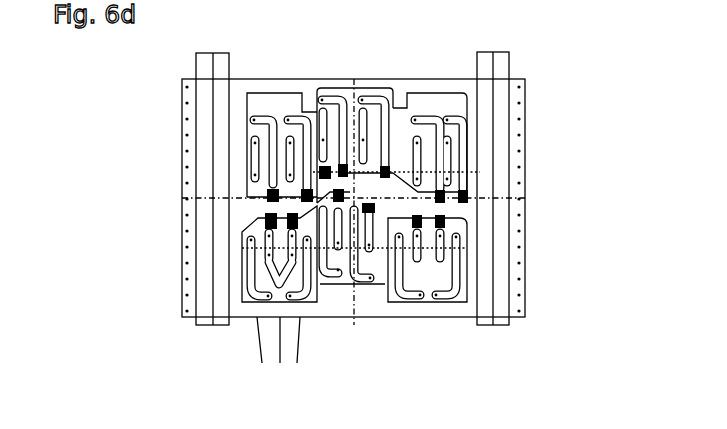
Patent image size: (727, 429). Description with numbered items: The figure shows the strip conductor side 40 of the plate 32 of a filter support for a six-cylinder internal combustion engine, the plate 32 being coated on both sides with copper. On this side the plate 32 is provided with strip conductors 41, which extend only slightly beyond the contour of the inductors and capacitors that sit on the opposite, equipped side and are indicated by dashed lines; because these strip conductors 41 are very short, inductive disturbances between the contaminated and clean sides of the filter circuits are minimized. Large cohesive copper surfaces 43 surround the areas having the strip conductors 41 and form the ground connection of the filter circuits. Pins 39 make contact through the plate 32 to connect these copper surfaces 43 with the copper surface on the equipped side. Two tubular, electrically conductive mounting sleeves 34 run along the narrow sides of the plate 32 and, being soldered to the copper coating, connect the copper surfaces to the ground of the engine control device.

The plate 32 is at (428, 62).
The mounting sleeves 34 is at (229, 55).
The pins 39 is at (182, 135).
The strip conductor side 40 is at (313, 88).
The strip conductors 41 is at (278, 353).
The copper surfaces 43 is at (243, 215).